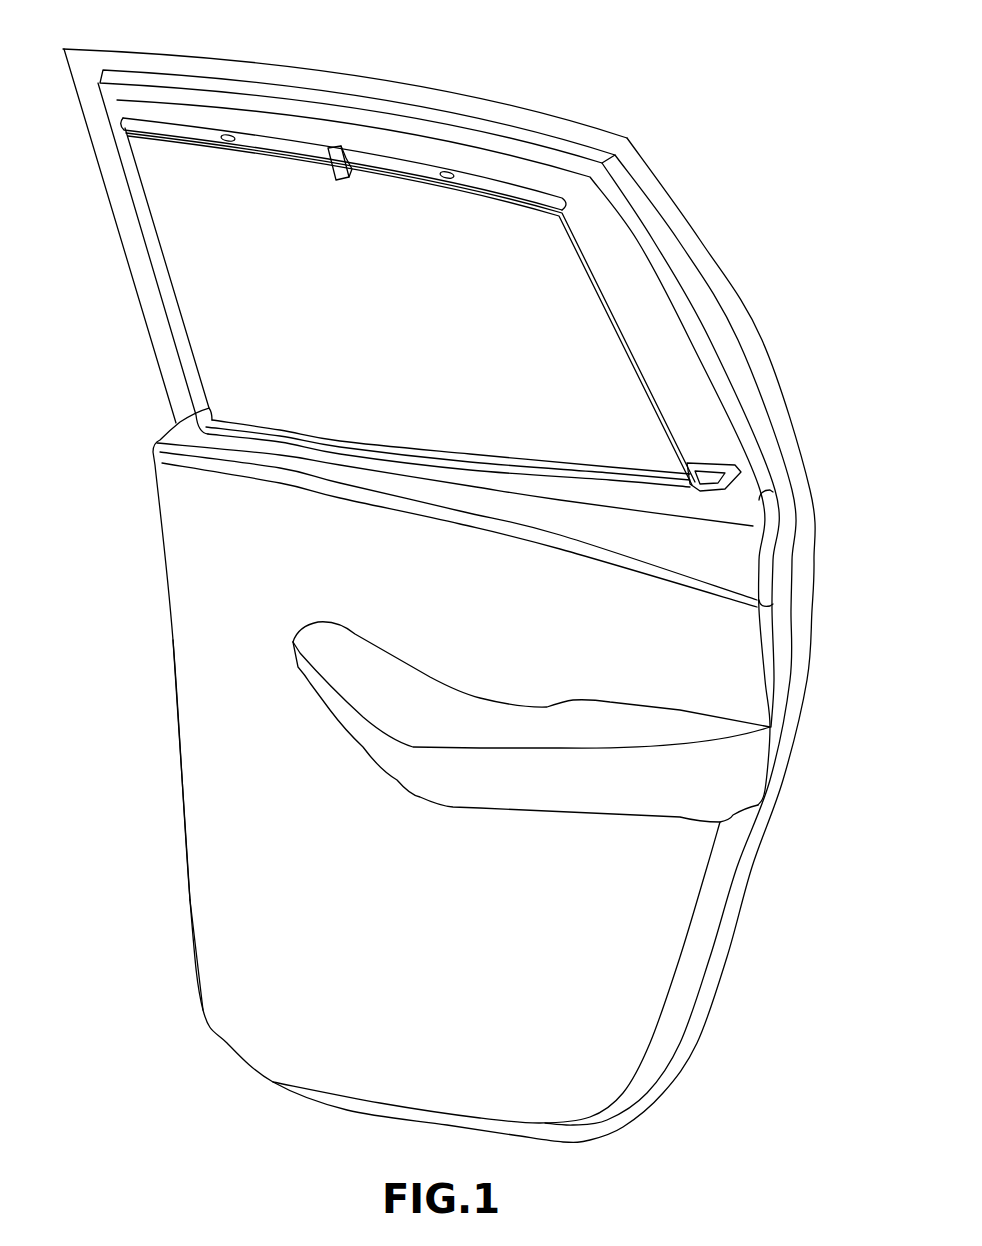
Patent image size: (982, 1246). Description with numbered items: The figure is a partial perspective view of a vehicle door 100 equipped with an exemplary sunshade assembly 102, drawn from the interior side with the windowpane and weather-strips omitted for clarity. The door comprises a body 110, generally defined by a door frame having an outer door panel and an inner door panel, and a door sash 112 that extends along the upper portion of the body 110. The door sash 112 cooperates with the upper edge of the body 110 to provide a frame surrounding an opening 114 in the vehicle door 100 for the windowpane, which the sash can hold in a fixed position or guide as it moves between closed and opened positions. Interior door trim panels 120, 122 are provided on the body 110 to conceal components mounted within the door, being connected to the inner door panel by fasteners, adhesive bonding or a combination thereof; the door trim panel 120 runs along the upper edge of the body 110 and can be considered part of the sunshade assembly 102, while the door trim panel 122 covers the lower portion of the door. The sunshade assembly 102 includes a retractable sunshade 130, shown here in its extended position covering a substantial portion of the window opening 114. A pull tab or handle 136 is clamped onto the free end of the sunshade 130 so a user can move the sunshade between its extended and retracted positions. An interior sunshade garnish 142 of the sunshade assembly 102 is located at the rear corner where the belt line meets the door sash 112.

The vehicle door 100 is at (148, 665).
The sunshade assembly 102 is at (416, 532).
The body 110 is at (238, 918).
The door sash 112 is at (303, 78).
The opening 114 is at (623, 272).
The door trim panel 120 is at (622, 533).
The door trim panel 122 is at (202, 757).
The sunshade 130 is at (617, 385).
The pull tab or handle 136 is at (337, 167).
The interior sunshade garnish 142 is at (710, 463).